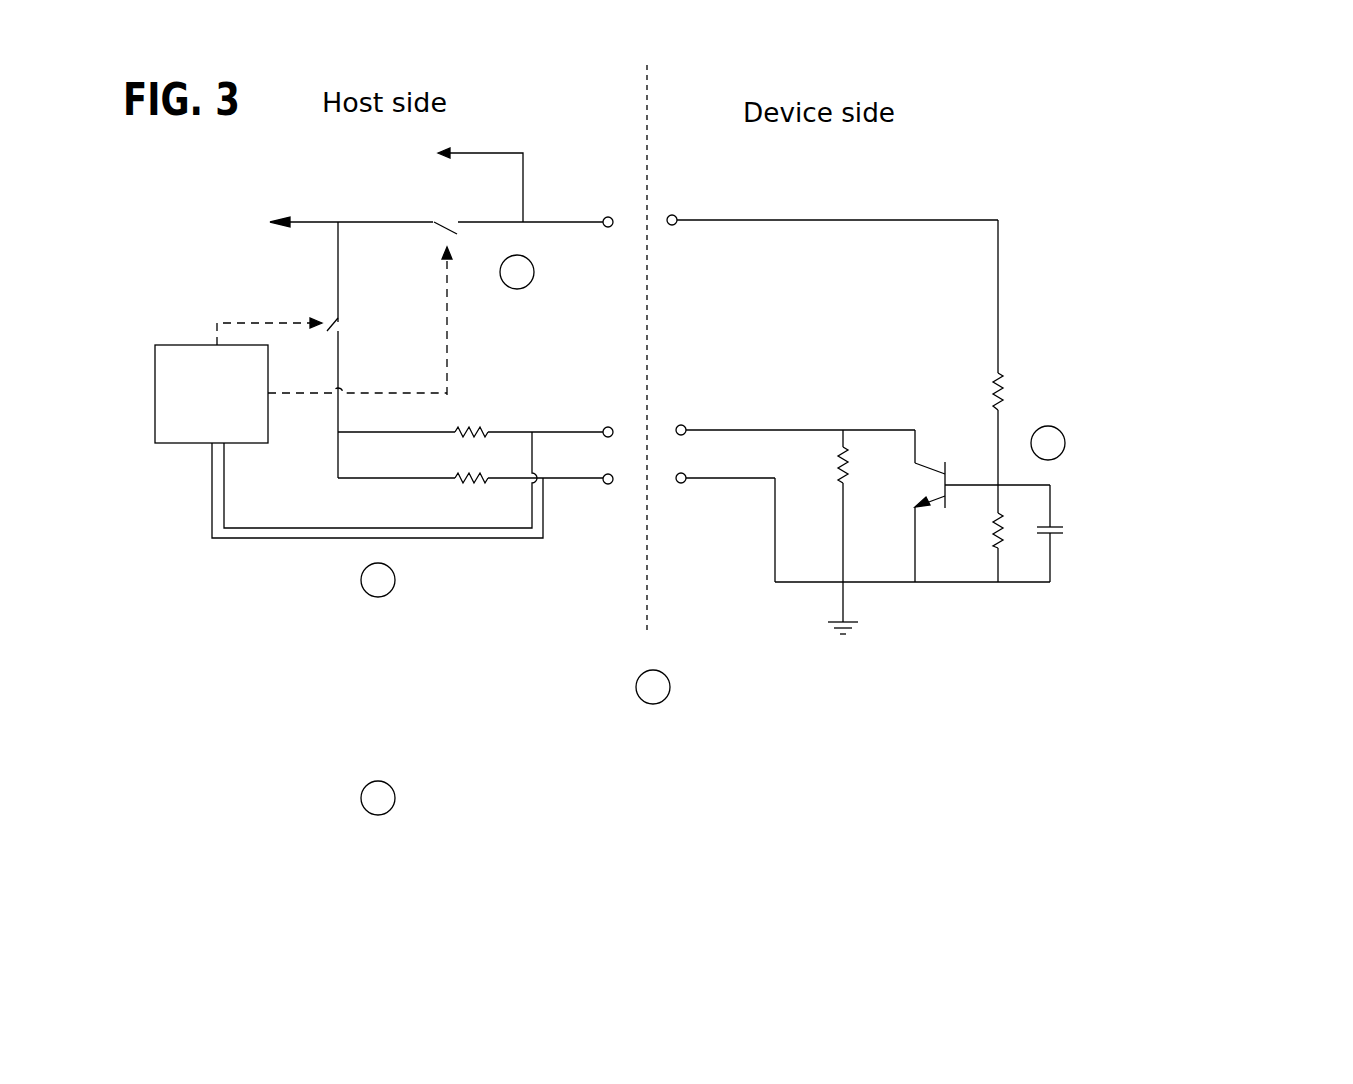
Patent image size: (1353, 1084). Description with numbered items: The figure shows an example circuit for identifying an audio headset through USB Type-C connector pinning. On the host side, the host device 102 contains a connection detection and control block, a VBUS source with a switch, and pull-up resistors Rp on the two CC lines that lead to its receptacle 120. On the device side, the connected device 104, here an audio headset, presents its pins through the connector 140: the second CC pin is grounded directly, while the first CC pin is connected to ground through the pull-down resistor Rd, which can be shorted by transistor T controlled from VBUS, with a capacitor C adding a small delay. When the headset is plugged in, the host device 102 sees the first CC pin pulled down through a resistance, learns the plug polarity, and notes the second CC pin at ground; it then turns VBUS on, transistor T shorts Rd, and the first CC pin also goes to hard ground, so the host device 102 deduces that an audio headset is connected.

The host device 102 is at (226, 653).
The connected device 104 is at (1030, 661).
The receptacle 120 is at (600, 547).
The connector 140 is at (690, 556).